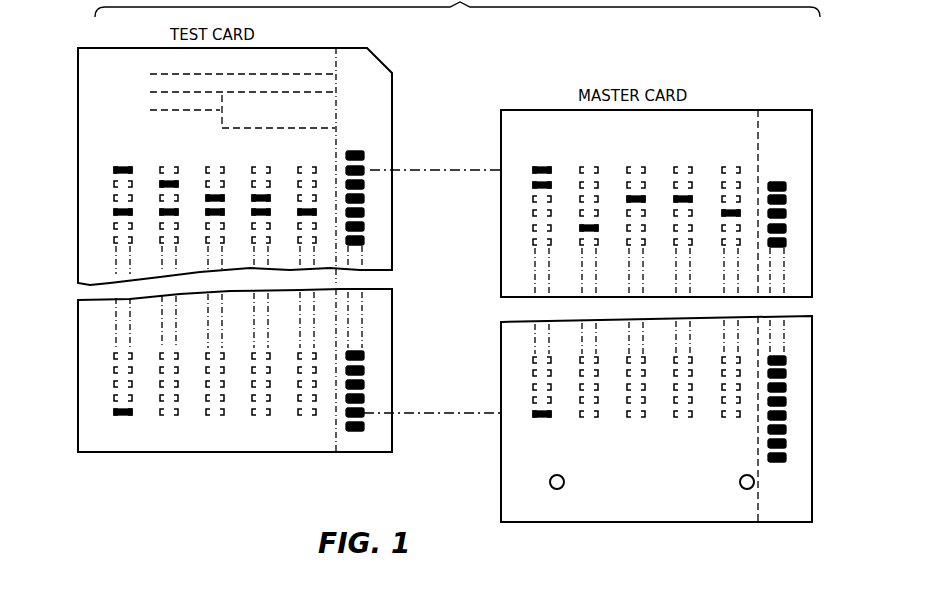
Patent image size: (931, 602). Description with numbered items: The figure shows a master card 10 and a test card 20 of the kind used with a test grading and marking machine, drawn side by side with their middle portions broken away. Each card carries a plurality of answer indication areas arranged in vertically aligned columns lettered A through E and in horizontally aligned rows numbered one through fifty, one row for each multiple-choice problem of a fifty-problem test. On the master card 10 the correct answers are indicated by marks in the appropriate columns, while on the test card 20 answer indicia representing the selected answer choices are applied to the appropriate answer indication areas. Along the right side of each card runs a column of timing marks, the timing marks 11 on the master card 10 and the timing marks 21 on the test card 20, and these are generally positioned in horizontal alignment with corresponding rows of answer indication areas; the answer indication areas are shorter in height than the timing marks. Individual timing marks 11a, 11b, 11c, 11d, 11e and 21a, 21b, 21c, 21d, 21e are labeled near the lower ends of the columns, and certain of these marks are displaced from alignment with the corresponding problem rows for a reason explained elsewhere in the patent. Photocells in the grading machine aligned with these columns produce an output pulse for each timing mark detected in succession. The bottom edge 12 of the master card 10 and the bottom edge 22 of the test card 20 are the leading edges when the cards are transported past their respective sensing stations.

The master card 10 is at (669, 187).
The timing marks 11 is at (788, 242).
The timing mark 11a is at (788, 457).
The timing mark 11b is at (788, 443).
The timing mark 11c is at (788, 429).
The timing mark 11d is at (788, 415).
The timing mark 11e is at (788, 401).
The bottom edge 12 is at (676, 436).
The test card 20 is at (254, 166).
The timing marks 21 is at (366, 228).
The timing mark 21a is at (366, 428).
The timing mark 21b is at (366, 413).
The timing mark 21c is at (366, 399).
The timing mark 21d is at (366, 385).
The timing mark 21e is at (366, 370).
The bottom edge 22 is at (253, 387).